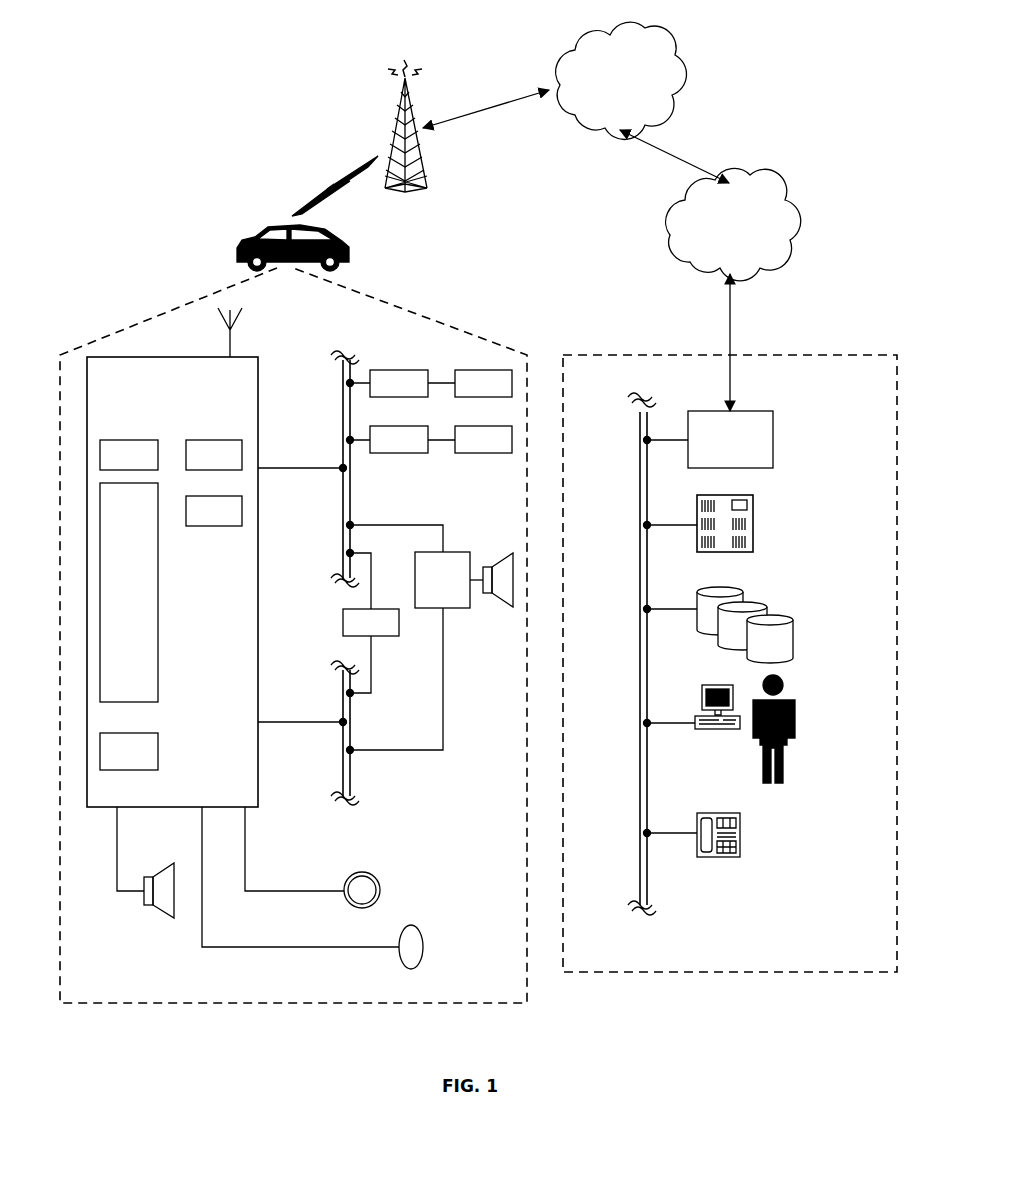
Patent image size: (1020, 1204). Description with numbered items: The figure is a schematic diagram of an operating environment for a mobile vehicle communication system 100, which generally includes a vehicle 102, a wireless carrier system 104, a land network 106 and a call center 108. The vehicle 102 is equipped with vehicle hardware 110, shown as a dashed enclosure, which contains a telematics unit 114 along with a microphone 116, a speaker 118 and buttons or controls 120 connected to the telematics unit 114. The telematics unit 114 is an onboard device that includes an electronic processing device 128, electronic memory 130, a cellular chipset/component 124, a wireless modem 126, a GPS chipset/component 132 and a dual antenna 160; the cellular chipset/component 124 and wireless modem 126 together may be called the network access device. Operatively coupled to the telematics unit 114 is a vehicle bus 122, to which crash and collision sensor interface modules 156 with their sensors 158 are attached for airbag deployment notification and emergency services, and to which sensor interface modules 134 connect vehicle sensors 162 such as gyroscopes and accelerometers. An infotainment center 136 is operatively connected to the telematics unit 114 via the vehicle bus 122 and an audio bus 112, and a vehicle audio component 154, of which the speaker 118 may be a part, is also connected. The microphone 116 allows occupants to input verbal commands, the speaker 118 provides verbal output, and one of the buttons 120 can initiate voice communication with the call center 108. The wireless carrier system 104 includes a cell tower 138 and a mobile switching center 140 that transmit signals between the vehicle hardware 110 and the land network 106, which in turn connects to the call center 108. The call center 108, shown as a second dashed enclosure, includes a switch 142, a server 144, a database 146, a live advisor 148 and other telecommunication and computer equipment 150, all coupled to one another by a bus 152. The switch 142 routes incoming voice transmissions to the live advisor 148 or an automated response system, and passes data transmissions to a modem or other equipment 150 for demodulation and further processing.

The communication system 100 is at (424, 19).
The vehicle 102 is at (242, 243).
The wireless carrier system 104 is at (529, 183).
The land network 106 is at (733, 224).
The call center 108 is at (733, 972).
The vehicle hardware 110 is at (258, 1003).
The audio bus 112 is at (343, 773).
The telematics unit 114 is at (258, 660).
The microphone 116 is at (415, 925).
The speaker 118 is at (158, 913).
The buttons or controls 120 is at (360, 873).
The vehicle bus 122 is at (350, 510).
The cellular chipset/component 124 is at (129, 455).
The wireless modem 126 is at (214, 455).
The electronic processing device 128 is at (129, 592).
The electronic memory 130 is at (129, 751).
The GPS chipset/component 132 is at (214, 511).
The sensor interface modules 134 is at (399, 439).
The infotainment center 136 is at (371, 622).
The cell tower 138 is at (414, 100).
The mobile switching center 140 is at (621, 80).
The switch 142 is at (730, 439).
The server 144 is at (753, 518).
The database 146 is at (793, 630).
The live advisor 148 is at (790, 700).
The telecommunication and computer equipment 150 is at (740, 828).
The bus 152 is at (640, 665).
The vehicle audio component 154 is at (464, 580).
The crash and collision sensor interface modules 156 is at (399, 383).
The sensors 158 is at (483, 383).
The dual antenna 160 is at (231, 350).
The vehicle sensors 162 is at (483, 439).